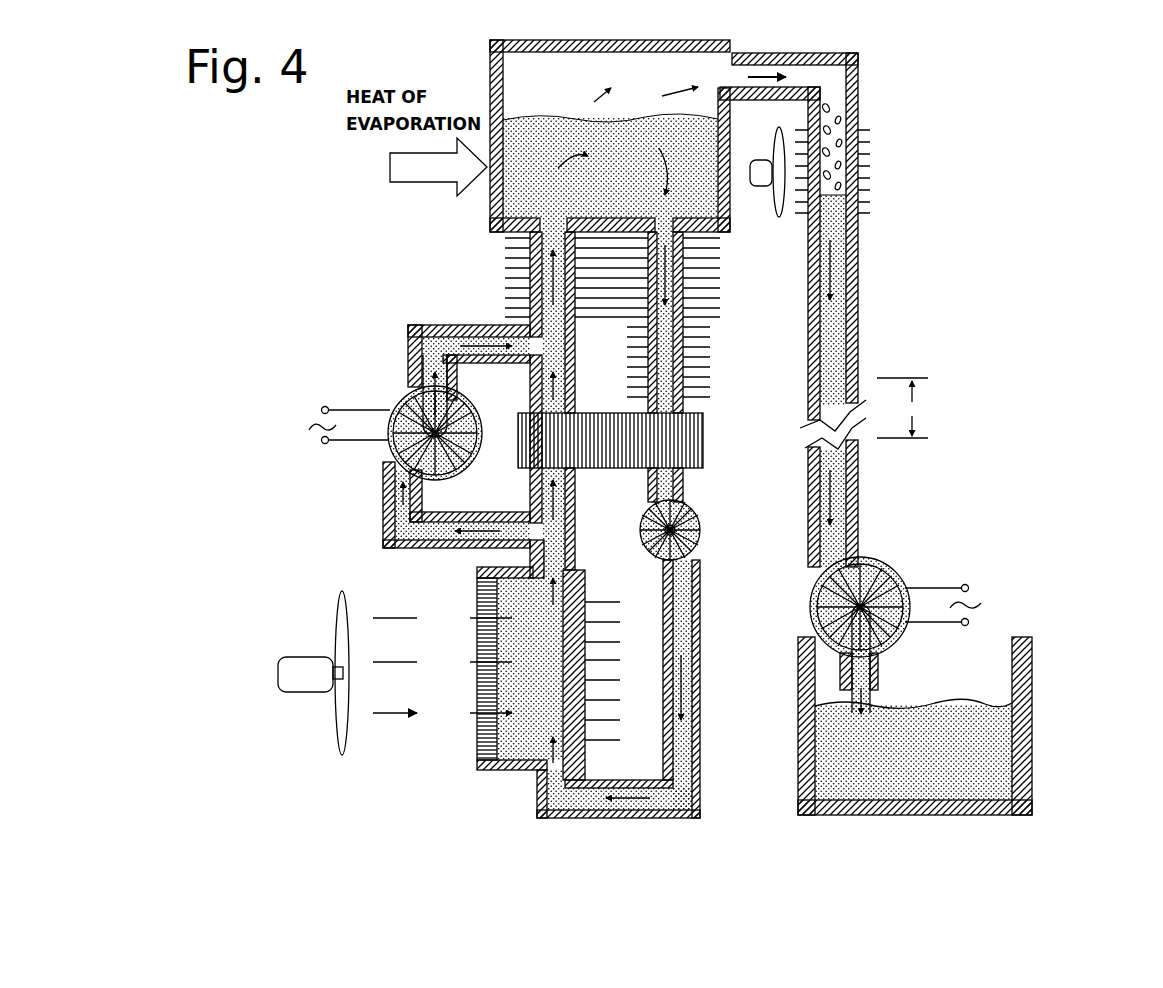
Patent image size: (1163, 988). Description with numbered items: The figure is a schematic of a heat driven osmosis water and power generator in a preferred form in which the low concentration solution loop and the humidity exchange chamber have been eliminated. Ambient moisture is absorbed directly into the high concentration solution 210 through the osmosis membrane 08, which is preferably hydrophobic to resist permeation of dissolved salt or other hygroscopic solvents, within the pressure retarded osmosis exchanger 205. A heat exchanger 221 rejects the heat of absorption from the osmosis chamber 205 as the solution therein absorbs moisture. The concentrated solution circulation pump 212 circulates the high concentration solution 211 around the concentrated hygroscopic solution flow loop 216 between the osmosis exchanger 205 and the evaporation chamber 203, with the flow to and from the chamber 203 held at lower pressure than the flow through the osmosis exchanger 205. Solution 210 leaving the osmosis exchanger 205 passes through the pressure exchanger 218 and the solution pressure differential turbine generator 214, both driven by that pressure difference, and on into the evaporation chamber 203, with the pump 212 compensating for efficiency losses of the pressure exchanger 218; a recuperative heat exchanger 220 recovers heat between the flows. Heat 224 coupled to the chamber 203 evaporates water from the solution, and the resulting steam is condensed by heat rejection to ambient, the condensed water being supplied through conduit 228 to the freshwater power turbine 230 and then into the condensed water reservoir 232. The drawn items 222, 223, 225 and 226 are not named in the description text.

The evaporation chamber 203 is at (490, 95).
The pressure retarded osmosis exchanger 205 is at (520, 772).
The osmosis membrane 08 is at (477, 730).
The concentrated hygroscopic solution 210 is at (520, 598).
The high concentration solution 211 is at (690, 760).
The concentrated solution circulation pump 212 is at (698, 512).
The solution pressure differential turbine generator 214 is at (400, 400).
The concentrated hygroscopic solution flow loop 216 is at (700, 635).
The pressure exchanger 218 is at (703, 447).
The recuperative heat exchanger 220 is at (510, 290).
The heat exchanger 221 is at (610, 680).
The down channel with fins 222 is at (685, 283).
The lower fins 223 is at (710, 367).
The heat 224 is at (438, 167).
The condenser fan and fins 225 is at (860, 150).
The condensate flow 226 is at (835, 290).
The conduit 228 is at (855, 355).
The freshwater power turbine 230 is at (892, 580).
The condensed water reservoir 232 is at (1032, 676).